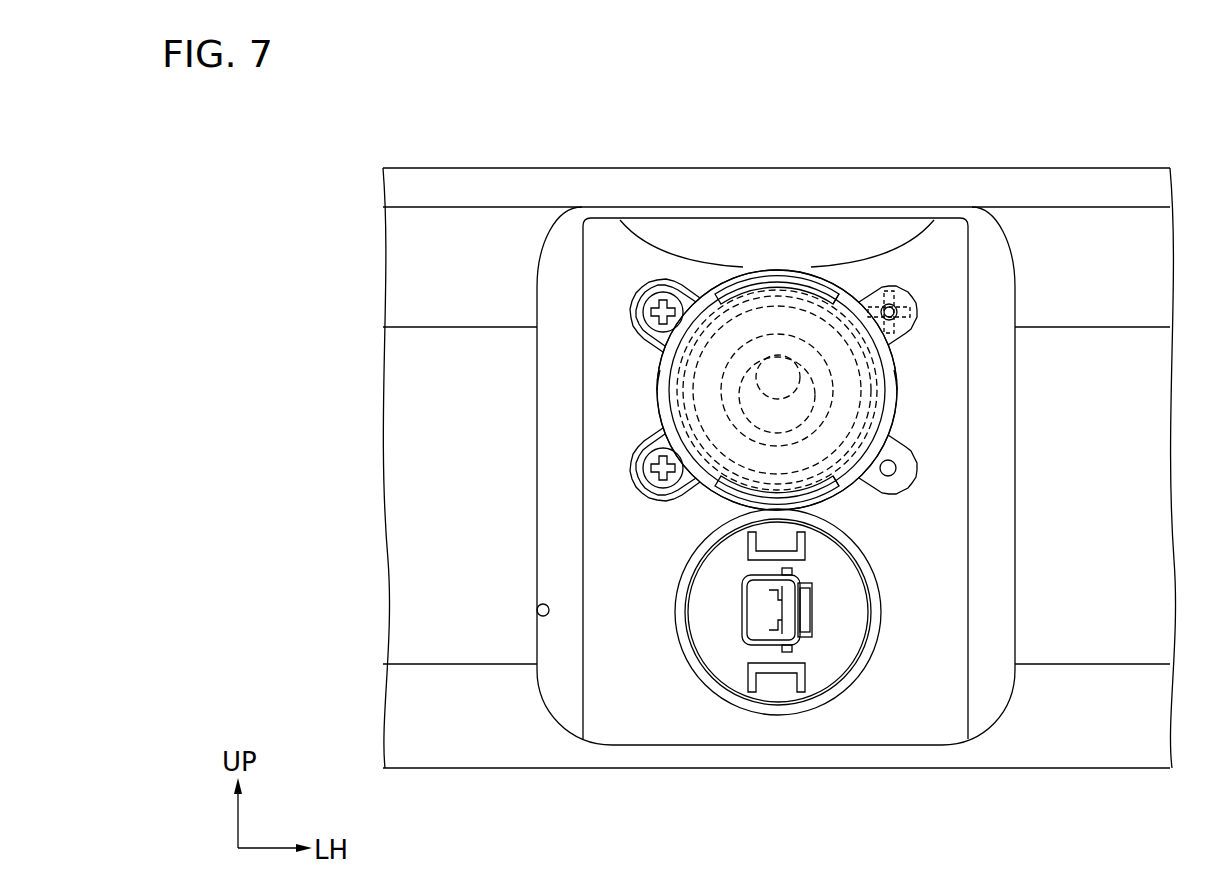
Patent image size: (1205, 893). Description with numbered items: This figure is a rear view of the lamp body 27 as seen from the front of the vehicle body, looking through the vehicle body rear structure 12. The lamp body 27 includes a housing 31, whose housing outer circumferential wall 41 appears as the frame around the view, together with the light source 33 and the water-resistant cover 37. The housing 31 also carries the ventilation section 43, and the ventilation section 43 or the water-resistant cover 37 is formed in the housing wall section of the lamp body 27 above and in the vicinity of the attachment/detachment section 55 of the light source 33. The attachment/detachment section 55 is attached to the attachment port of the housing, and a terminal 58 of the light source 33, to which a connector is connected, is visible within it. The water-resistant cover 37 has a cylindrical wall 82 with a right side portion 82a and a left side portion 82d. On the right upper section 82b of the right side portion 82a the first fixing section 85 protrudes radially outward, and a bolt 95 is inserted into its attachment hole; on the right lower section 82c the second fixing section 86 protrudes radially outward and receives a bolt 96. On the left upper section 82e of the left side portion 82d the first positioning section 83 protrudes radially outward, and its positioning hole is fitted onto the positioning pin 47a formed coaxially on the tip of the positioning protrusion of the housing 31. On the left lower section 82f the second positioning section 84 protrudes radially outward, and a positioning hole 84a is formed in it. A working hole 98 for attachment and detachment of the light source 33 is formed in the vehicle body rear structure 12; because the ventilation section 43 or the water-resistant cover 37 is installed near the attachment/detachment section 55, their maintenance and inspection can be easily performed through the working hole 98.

The vehicle body rear structure 12 is at (808, 152).
The lamp body 27 is at (583, 230).
The housing 31 is at (608, 357).
The light source 33 is at (844, 684).
The water-resistant cover 37 is at (762, 264).
The housing outer circumferential wall 41 is at (603, 430).
The ventilation section 43 is at (793, 400).
The positioning pin 47a is at (897, 312).
The attachment/detachment section 55 is at (880, 615).
The terminal 58 is at (745, 608).
The cylindrical wall 82 is at (822, 282).
The right side portion 82a is at (630, 386).
The right upper section 82b is at (712, 297).
The right lower section 82c is at (706, 478).
The left side portion 82d is at (924, 385).
The left upper section 82e is at (848, 300).
The left lower section 82f is at (846, 486).
The first positioning section 83 is at (904, 296).
The second positioning section 84 is at (900, 483).
The positioning hole 84a is at (894, 463).
The first fixing section 85 is at (640, 313).
The second fixing section 86 is at (648, 492).
The bolt 95 is at (645, 297).
The bolt 96 is at (636, 477).
The working hole 98 is at (538, 610).